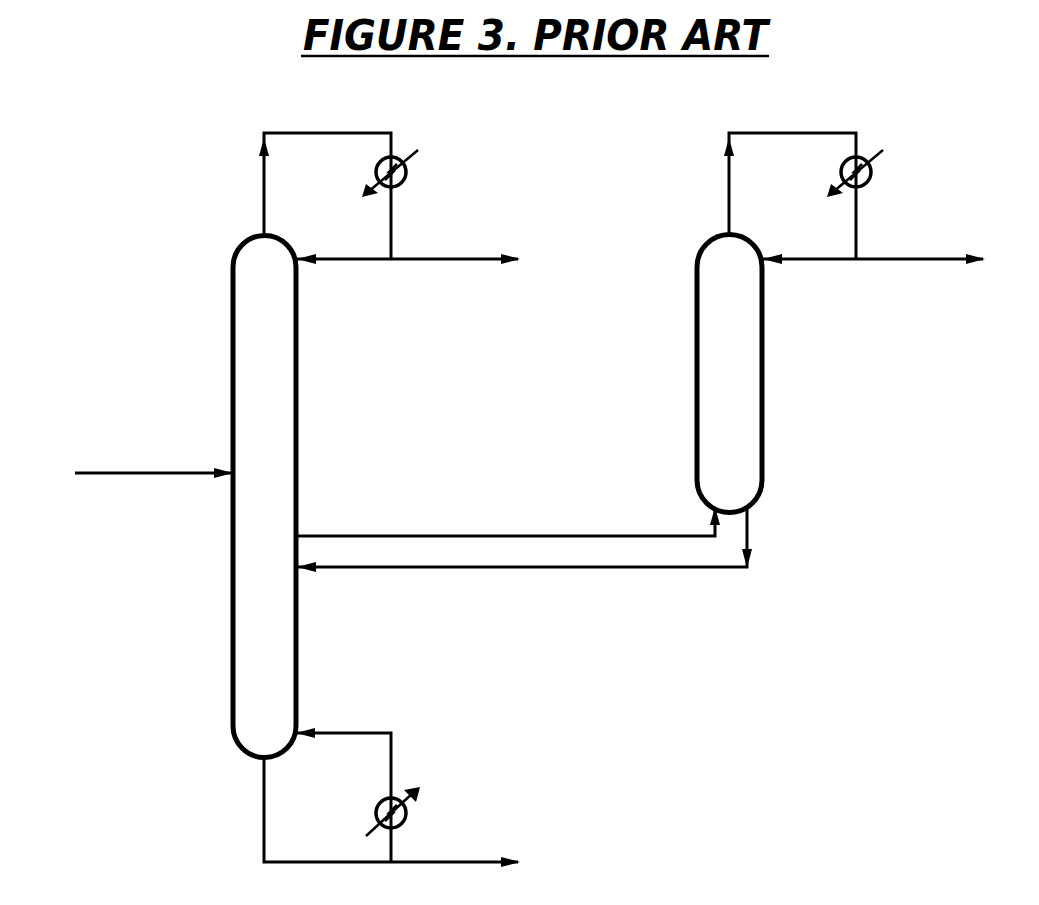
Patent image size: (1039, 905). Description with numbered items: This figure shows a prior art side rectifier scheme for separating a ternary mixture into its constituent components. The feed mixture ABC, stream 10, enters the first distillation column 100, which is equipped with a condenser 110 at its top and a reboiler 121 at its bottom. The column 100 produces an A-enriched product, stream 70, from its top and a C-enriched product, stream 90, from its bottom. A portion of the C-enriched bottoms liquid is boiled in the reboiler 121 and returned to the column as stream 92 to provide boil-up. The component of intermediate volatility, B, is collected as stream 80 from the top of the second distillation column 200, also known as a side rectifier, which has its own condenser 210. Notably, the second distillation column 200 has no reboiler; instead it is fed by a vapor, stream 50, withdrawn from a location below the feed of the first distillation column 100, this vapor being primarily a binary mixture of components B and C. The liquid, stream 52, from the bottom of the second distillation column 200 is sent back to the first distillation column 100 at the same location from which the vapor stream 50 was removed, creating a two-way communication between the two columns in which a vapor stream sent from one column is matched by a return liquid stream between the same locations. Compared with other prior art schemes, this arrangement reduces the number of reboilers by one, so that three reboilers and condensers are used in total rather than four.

The feed mixture ABC stream 10 is at (168, 475).
The vapor stream 50 is at (597, 534).
The liquid stream 52 is at (597, 569).
The A-enriched product stream 70 is at (442, 259).
The B-enriched product stream 80 is at (907, 259).
The C-enriched product stream 90 is at (442, 864).
The boiled bottoms stream 92 is at (352, 732).
The first distillation column 100 is at (232, 560).
The condenser 110 is at (420, 150).
The reboiler 121 is at (418, 800).
The second distillation column 200 is at (765, 425).
The condenser 210 is at (878, 162).